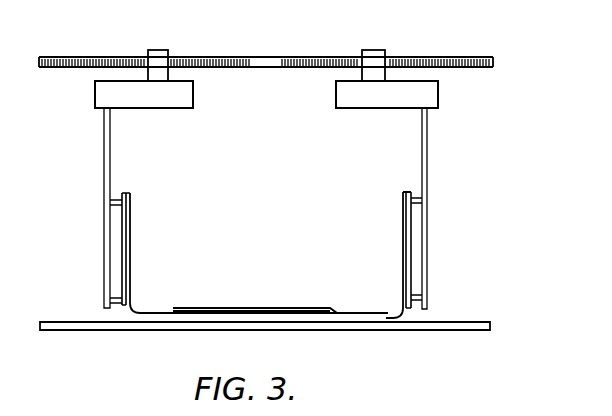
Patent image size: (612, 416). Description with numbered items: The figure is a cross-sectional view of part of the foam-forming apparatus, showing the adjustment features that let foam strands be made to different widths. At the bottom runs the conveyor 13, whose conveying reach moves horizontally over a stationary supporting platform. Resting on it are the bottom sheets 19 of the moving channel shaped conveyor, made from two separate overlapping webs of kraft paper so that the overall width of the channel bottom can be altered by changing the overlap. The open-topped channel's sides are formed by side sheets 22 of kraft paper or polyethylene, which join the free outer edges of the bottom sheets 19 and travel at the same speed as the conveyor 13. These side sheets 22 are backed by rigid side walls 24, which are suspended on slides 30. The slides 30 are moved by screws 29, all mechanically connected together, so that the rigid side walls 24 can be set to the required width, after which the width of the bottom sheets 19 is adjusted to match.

The screws 29 is at (270, 57).
The slides 30 is at (110, 93).
The side sheets 22 is at (130, 235).
The rigid side walls 24 is at (410, 192).
The bottom sheets 19 is at (153, 308).
The conveyor 13 is at (172, 323).